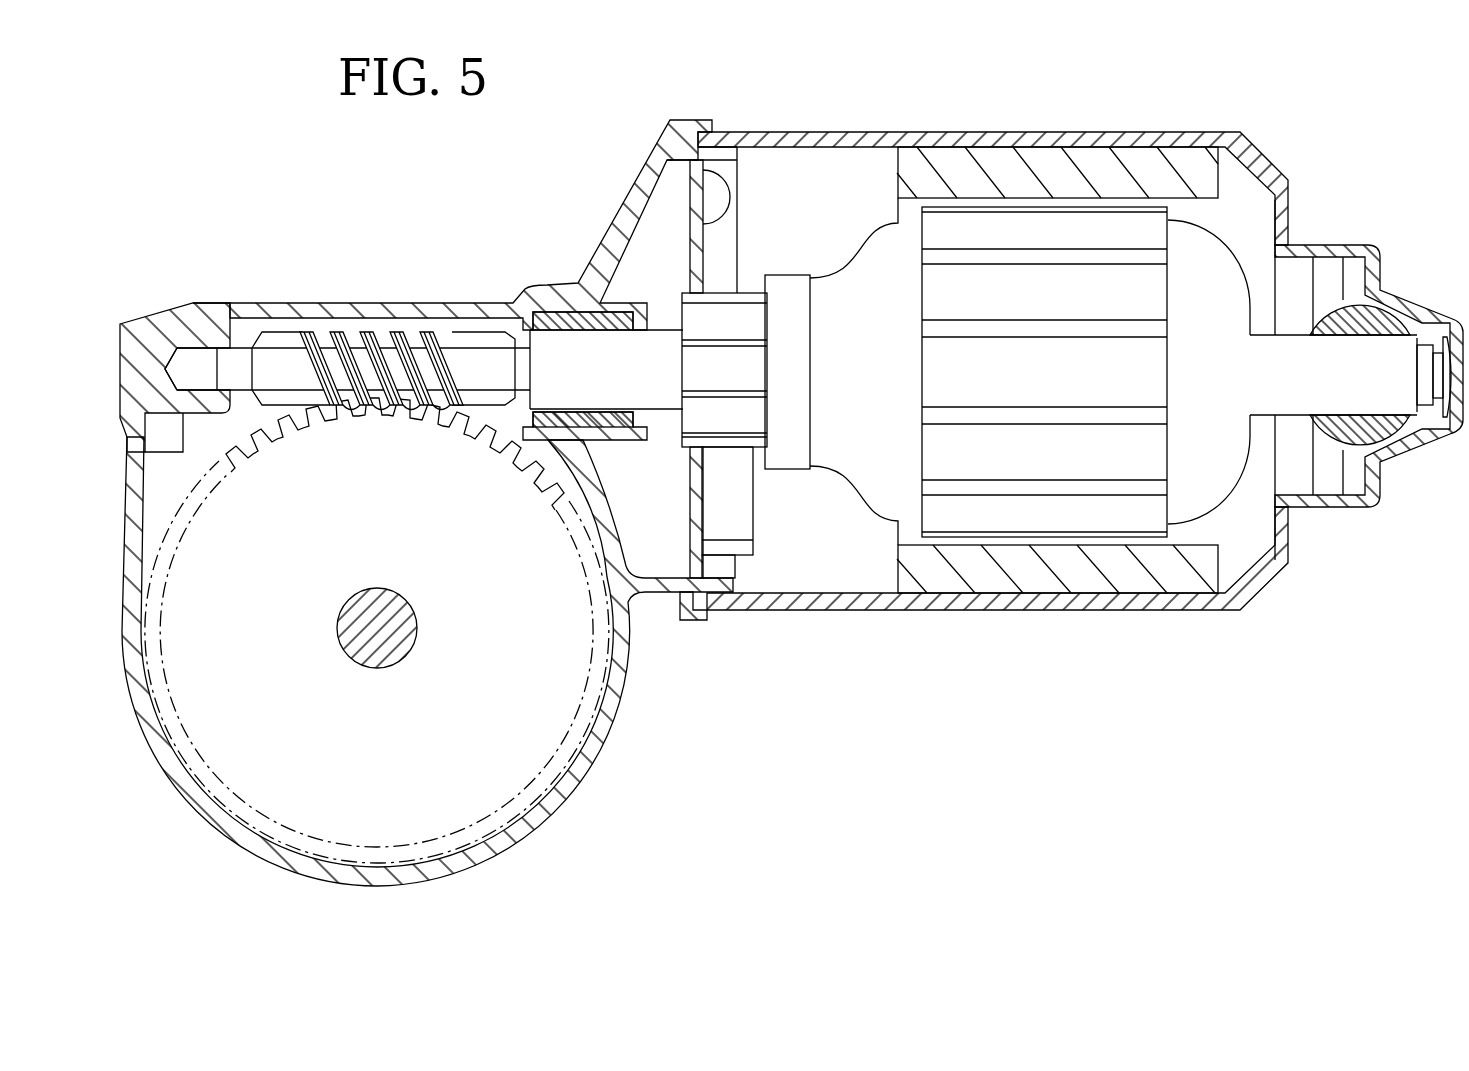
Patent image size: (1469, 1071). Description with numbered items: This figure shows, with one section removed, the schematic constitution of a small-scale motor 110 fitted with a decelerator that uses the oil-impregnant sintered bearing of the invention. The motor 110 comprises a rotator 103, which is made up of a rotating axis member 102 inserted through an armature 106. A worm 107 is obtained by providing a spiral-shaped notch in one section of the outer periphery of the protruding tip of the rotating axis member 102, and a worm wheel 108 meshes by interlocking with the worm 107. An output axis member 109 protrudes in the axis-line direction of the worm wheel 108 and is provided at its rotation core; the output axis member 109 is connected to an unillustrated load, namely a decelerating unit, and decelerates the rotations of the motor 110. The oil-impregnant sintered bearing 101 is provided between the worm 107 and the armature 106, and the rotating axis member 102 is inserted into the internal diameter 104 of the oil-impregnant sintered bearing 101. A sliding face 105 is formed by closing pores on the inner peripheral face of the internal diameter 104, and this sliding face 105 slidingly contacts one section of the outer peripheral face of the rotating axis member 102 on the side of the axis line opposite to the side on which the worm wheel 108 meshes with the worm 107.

The oil-impregnant sintered bearing 101 is at (582, 310).
The rotating axis member 102 is at (667, 395).
The rotator 103 is at (800, 503).
The internal diameter 104 is at (561, 408).
The sliding face 105 is at (608, 340).
The armature 106 is at (1250, 512).
The worm 107 is at (376, 330).
The worm wheel 108 is at (556, 733).
The output axis member 109 is at (417, 641).
The motor 110 is at (480, 260).